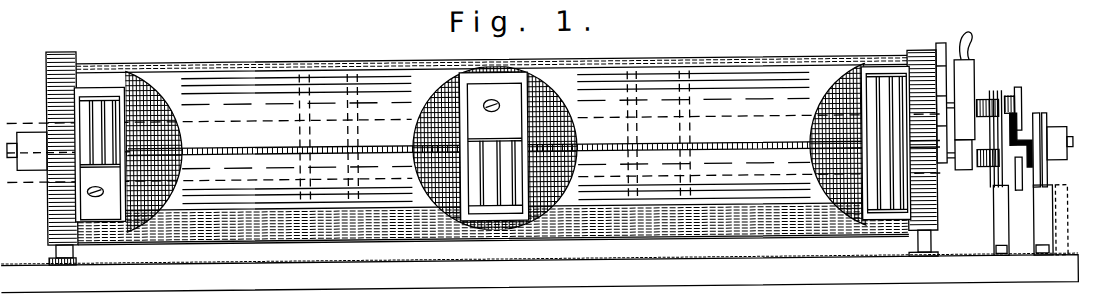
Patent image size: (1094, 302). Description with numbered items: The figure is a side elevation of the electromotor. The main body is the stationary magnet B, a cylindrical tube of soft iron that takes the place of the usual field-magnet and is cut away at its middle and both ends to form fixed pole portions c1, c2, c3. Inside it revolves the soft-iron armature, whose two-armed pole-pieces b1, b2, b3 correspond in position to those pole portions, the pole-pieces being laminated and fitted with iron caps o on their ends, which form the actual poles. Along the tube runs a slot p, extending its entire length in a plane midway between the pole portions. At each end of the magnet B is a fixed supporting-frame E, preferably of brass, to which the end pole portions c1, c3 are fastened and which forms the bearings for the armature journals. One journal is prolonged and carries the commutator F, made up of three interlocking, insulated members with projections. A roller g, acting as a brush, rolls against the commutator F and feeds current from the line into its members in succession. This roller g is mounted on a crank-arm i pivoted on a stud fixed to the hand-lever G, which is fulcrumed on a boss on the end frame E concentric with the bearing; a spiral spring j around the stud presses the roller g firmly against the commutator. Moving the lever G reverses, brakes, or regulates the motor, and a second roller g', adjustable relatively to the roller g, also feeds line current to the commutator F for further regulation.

The stationary magnet B is at (473, 150).
The slot p is at (473, 149).
The supporting-frame E is at (492, 154).
The pole portion c1 is at (98, 152).
The pole portion c2 is at (495, 148).
The pole portion c3 is at (896, 145).
The armature pole-piece b1 is at (99, 154).
The armature pole-piece b2 is at (494, 146).
The armature pole-piece b3 is at (886, 142).
The iron cap o is at (299, 149).
The hand-lever G is at (966, 101).
The spiral spring j is at (987, 125).
The crank-arm i is at (1008, 99).
The roller g is at (1021, 105).
The second roller g' is at (1020, 182).
The commutator F is at (1053, 144).